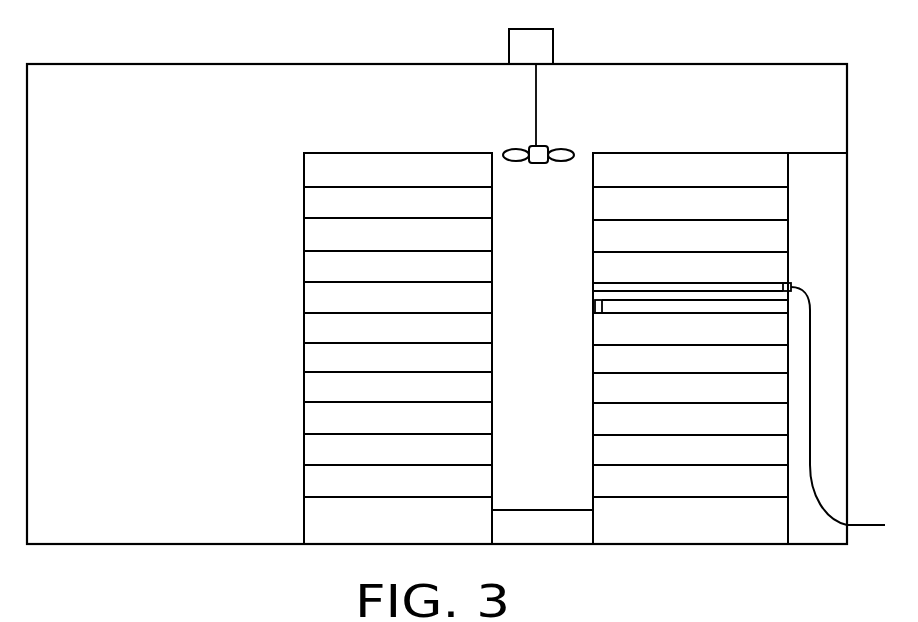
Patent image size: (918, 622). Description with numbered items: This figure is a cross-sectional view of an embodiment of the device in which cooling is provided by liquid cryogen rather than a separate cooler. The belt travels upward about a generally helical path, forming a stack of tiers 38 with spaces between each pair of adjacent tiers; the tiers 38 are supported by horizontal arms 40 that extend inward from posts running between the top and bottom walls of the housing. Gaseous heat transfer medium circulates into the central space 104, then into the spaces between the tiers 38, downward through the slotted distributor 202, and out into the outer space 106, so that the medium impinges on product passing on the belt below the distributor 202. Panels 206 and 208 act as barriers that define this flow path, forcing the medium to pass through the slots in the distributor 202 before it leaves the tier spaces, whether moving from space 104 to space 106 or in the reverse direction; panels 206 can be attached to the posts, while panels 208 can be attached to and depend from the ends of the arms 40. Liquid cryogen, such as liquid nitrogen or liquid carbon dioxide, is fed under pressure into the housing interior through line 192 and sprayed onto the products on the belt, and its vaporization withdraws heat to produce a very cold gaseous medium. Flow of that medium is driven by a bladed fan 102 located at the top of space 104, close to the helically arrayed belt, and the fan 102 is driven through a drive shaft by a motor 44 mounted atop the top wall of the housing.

The motor 44 is at (545, 56).
The bladed fan 102 is at (518, 148).
The space 104 is at (565, 228).
The space 106 is at (272, 238).
The horizontal arms 40 is at (594, 286).
The tiers 38 is at (668, 283).
The distributor 202 is at (617, 298).
The panels 206 is at (791, 287).
The panels 208 is at (593, 305).
The line 192 is at (812, 428).